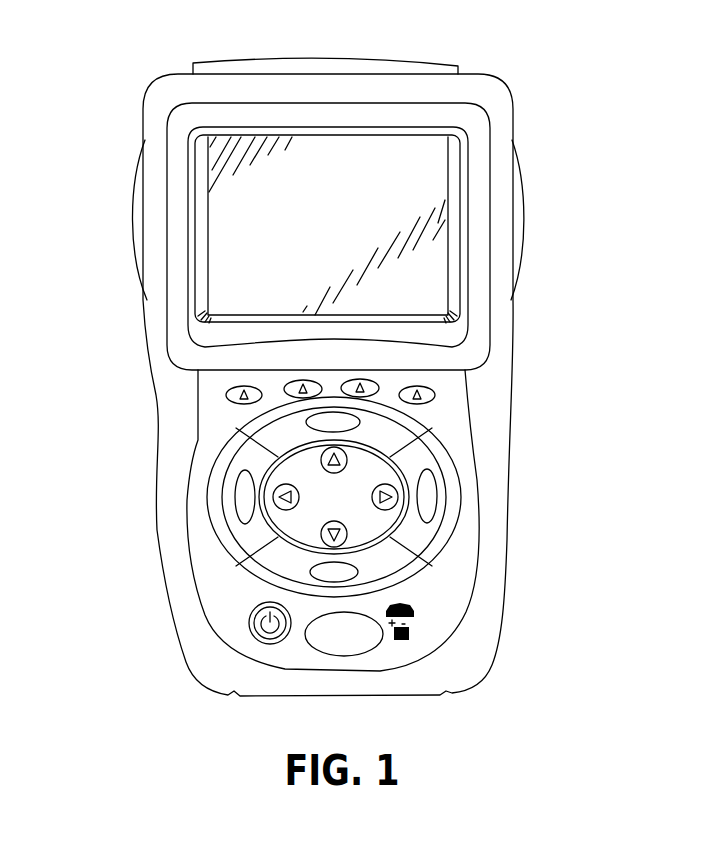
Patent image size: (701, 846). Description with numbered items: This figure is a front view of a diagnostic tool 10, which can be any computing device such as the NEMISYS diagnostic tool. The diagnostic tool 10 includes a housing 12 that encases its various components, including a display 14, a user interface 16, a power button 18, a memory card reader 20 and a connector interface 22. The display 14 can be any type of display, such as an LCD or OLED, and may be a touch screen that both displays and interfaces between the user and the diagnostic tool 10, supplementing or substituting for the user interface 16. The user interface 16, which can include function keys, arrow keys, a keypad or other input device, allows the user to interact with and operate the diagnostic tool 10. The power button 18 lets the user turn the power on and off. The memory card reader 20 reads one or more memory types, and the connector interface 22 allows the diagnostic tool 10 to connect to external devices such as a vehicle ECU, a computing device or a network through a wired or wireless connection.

The diagnostic tool 10 is at (78, 76).
The housing 12 is at (497, 78).
The display 14 is at (432, 285).
The user interface 16 is at (415, 460).
The power button 18 is at (250, 624).
The memory card reader 20 is at (131, 218).
The connector interface 22 is at (325, 57).